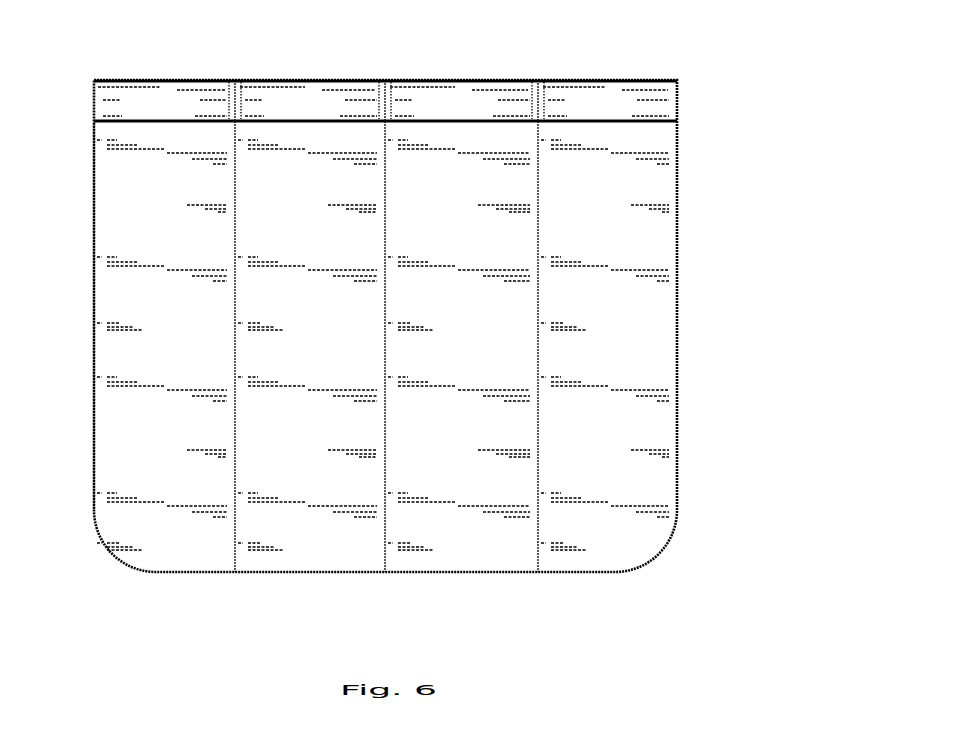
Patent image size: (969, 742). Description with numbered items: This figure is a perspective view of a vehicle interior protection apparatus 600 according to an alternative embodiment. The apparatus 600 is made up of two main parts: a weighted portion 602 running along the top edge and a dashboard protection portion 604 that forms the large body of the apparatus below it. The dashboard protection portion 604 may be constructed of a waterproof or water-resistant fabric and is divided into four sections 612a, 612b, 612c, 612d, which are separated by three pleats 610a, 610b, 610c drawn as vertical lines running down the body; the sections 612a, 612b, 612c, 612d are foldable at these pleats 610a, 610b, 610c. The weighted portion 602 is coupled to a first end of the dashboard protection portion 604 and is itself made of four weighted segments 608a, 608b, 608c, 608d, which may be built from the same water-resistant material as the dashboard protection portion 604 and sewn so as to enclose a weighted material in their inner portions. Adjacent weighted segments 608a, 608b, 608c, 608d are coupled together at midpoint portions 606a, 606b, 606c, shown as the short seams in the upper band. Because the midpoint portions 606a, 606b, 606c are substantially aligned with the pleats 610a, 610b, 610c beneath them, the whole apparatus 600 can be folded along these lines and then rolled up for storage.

The vehicle interior protection apparatus 600 is at (857, 104).
The weighted portion 602 is at (80, 102).
The dashboard protection portion 604 is at (105, 240).
The midpoint portion 606a is at (538, 80).
The midpoint portion 606b is at (385, 80).
The midpoint portion 606c is at (235, 80).
The weighted segment 608a is at (613, 92).
The weighted segment 608b is at (447, 92).
The weighted segment 608c is at (308, 92).
The weighted segment 608d is at (152, 92).
The pleat 610a is at (536, 574).
The pleat 610b is at (385, 574).
The pleat 610c is at (234, 574).
The section 612a is at (603, 537).
The section 612b is at (477, 560).
The section 612c is at (313, 565).
The section 612d is at (178, 558).